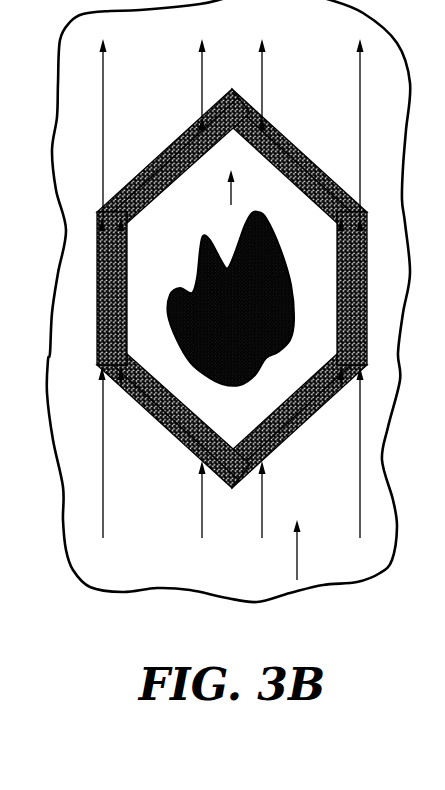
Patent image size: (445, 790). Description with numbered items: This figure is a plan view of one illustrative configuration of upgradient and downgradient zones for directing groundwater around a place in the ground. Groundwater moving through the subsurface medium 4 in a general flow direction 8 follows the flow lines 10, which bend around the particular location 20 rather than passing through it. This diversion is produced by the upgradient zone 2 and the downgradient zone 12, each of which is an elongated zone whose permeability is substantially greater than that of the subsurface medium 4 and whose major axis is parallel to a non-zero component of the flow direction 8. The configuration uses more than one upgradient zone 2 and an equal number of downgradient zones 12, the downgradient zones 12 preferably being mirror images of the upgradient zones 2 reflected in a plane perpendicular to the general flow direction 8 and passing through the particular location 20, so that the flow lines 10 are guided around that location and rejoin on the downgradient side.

The upgradient zone 2 is at (180, 441).
The subsurface medium 4 is at (103, 572).
The flow direction 8 is at (297, 553).
The flow lines 10 is at (104, 78).
The downgradient zone 12 is at (184, 140).
The particular location 20 is at (216, 326).